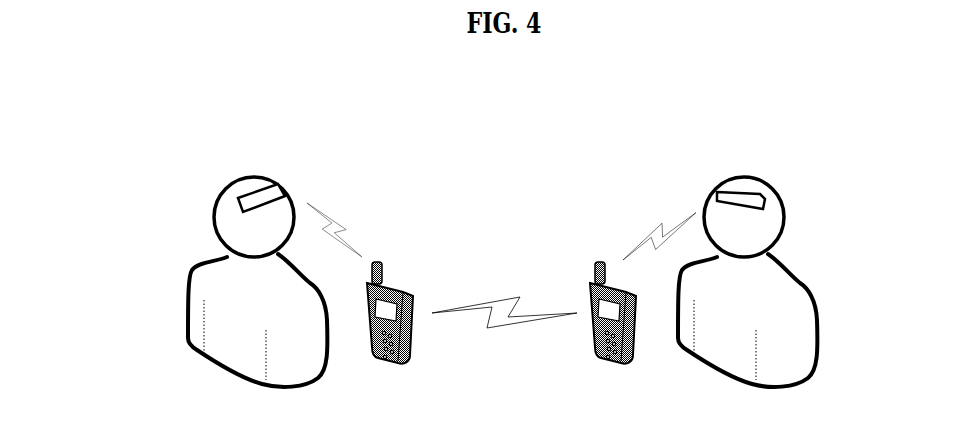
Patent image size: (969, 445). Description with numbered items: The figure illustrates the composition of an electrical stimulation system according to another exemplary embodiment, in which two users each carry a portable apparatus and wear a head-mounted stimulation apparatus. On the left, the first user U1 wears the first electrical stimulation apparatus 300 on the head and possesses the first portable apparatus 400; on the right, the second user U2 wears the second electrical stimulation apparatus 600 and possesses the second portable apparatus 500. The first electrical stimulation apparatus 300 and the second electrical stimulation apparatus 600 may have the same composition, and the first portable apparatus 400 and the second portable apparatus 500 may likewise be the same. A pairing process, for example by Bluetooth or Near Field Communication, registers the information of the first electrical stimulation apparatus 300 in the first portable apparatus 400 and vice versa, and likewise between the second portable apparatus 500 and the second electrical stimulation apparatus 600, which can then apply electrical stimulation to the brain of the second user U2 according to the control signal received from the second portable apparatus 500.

The first electrical stimulation apparatus 300 is at (280, 187).
The first portable apparatus 400 is at (377, 262).
The second portable apparatus 500 is at (600, 262).
The second electrical stimulation apparatus 600 is at (757, 195).
The first user U1 is at (188, 327).
The second user U2 is at (820, 330).